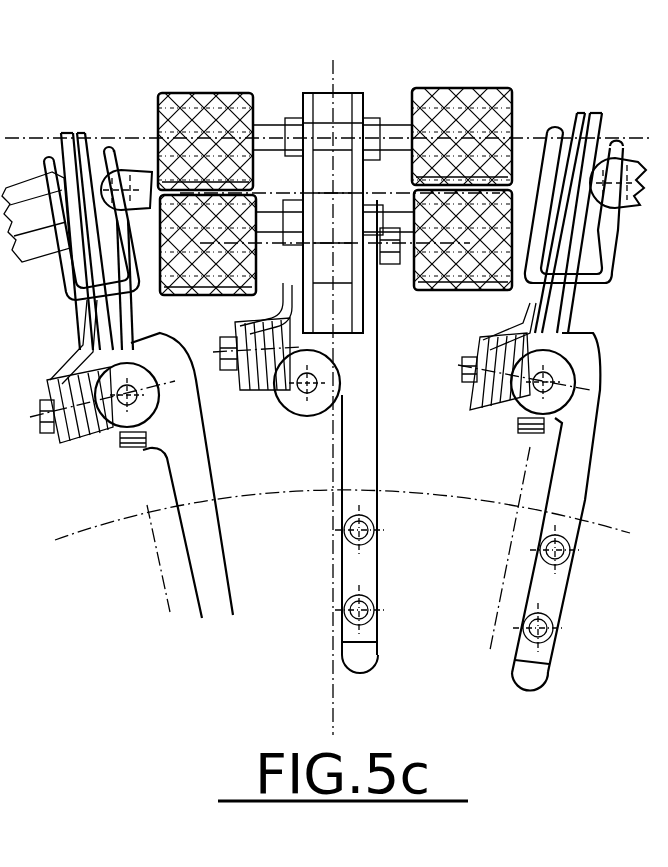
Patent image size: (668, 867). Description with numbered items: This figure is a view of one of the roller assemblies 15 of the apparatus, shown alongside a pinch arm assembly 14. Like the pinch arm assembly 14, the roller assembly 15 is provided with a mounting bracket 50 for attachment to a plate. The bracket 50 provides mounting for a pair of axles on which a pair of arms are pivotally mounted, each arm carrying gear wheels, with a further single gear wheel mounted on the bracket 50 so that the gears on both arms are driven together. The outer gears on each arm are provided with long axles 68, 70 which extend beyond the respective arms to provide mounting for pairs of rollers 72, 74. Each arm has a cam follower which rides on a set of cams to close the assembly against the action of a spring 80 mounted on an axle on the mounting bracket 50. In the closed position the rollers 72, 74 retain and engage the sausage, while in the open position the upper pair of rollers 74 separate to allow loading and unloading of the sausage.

The pinch arm assembly 14 is at (66, 126).
The roller assembly 15 is at (376, 100).
The mounting bracket 50 is at (366, 645).
The long axle 68 is at (392, 252).
The long axle 70 is at (285, 140).
The rollers 72 is at (157, 195).
The rollers 74 is at (158, 106).
The spring 80 is at (270, 372).